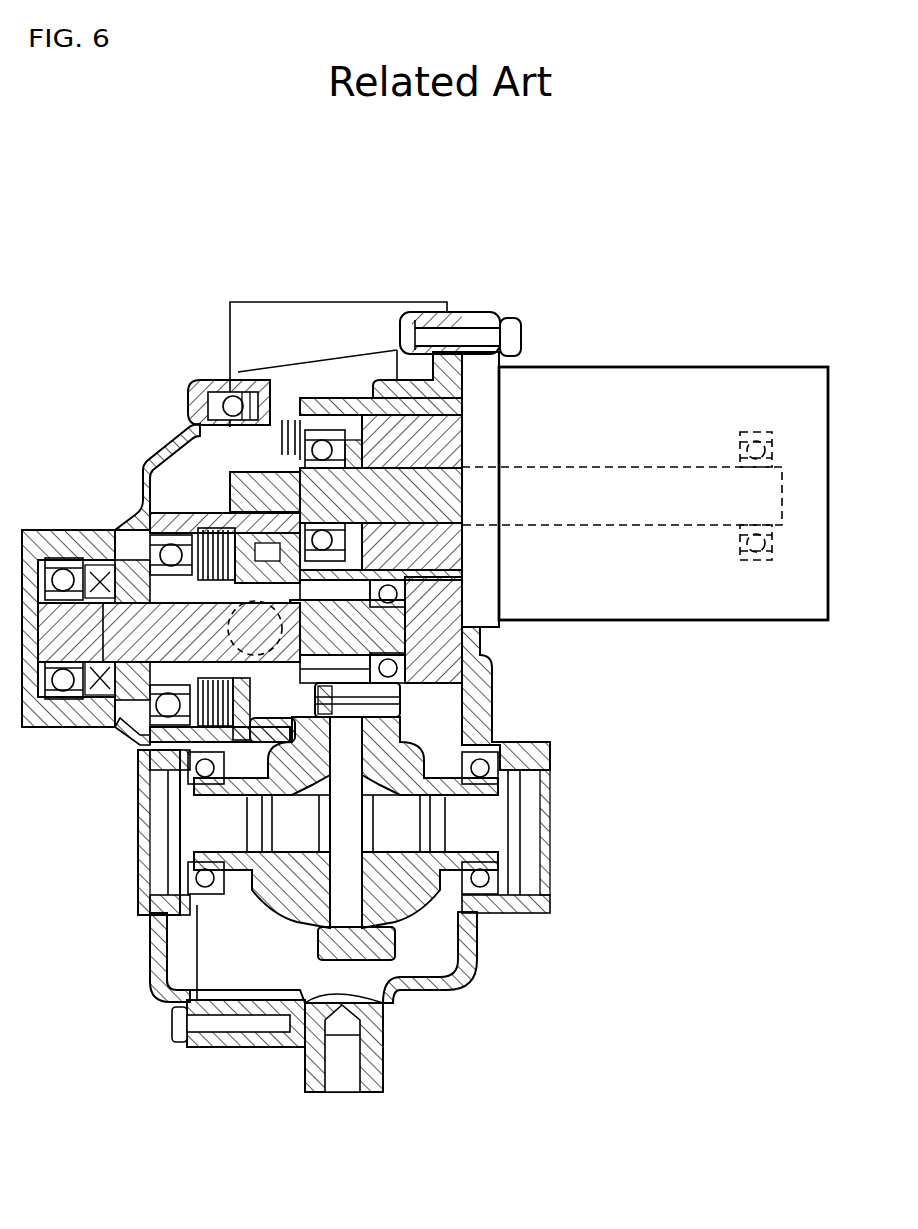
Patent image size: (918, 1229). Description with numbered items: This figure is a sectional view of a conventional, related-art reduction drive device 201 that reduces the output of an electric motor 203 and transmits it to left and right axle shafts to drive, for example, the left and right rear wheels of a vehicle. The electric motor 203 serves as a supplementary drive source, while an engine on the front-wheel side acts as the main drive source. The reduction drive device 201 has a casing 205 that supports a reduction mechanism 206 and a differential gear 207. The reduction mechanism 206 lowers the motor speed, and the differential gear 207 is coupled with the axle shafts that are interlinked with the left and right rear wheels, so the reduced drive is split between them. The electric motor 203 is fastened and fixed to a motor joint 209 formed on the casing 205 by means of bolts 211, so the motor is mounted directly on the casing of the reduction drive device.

The reduction drive device 201 is at (495, 302).
The electric motor 203 is at (708, 365).
The casing 205 is at (160, 443).
The reduction mechanism 206 is at (225, 455).
The differential gear 207 is at (420, 740).
The motor joint 209 is at (452, 306).
The bolts 211 is at (522, 338).